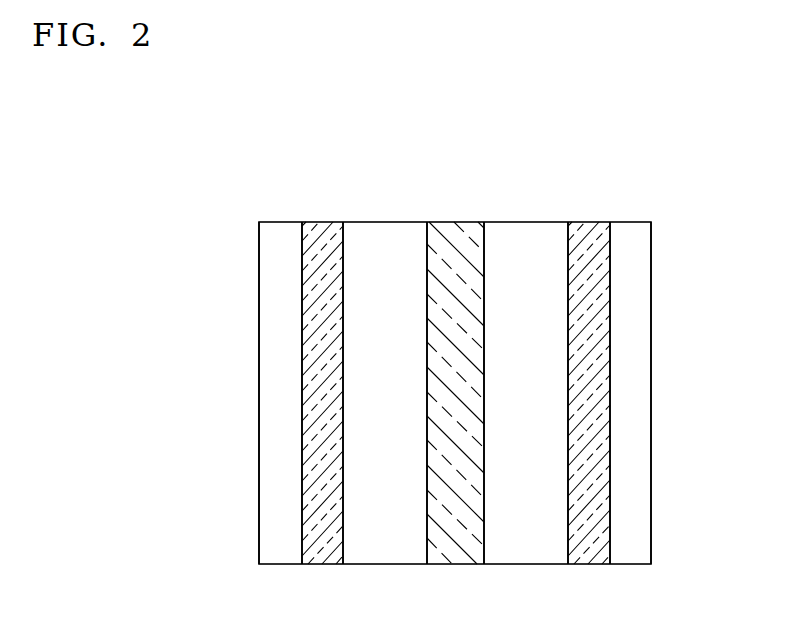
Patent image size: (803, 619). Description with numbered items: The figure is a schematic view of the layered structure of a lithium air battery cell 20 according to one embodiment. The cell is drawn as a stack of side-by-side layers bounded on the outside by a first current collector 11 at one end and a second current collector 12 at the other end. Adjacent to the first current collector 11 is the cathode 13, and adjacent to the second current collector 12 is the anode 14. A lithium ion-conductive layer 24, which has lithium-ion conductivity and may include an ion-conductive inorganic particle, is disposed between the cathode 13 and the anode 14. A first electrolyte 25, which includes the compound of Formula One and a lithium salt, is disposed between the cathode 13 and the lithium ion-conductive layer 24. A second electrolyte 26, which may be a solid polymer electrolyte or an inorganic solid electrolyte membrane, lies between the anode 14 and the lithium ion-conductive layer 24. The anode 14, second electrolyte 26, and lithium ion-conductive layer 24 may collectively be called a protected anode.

The lithium air battery cell 20 is at (686, 200).
The first current collector 11 is at (283, 231).
The second current collector 12 is at (633, 231).
The cathode 13 is at (325, 232).
The anode 14 is at (593, 231).
The lithium ion-conductive layer 24 is at (447, 232).
The first electrolyte 25 is at (386, 232).
The second electrolyte 26 is at (527, 231).